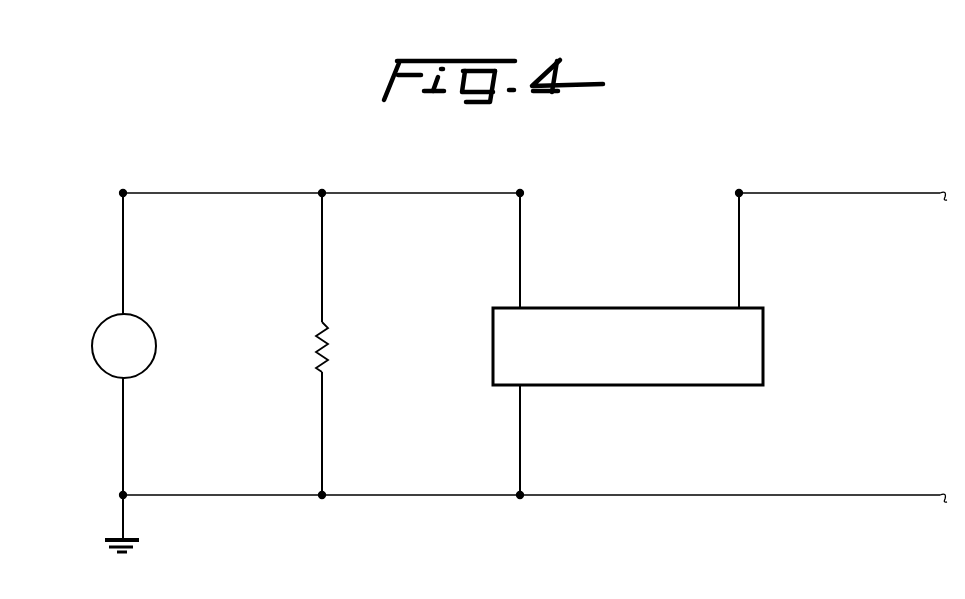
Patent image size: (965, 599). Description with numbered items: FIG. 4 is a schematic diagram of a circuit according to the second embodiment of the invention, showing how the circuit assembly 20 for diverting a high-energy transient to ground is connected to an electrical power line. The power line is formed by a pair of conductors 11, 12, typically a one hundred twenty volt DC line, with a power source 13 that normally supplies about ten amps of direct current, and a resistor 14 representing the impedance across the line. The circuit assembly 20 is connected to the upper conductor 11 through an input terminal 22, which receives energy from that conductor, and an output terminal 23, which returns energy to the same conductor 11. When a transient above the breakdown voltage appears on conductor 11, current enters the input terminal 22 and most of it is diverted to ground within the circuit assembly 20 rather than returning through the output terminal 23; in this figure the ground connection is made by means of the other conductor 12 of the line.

The conductor 11 is at (416, 197).
The conductor 12 is at (795, 495).
The power source 13 is at (113, 378).
The resistor 14 is at (317, 357).
The circuit assembly 20 is at (682, 385).
The input terminal 22 is at (523, 308).
The output terminal 23 is at (742, 307).